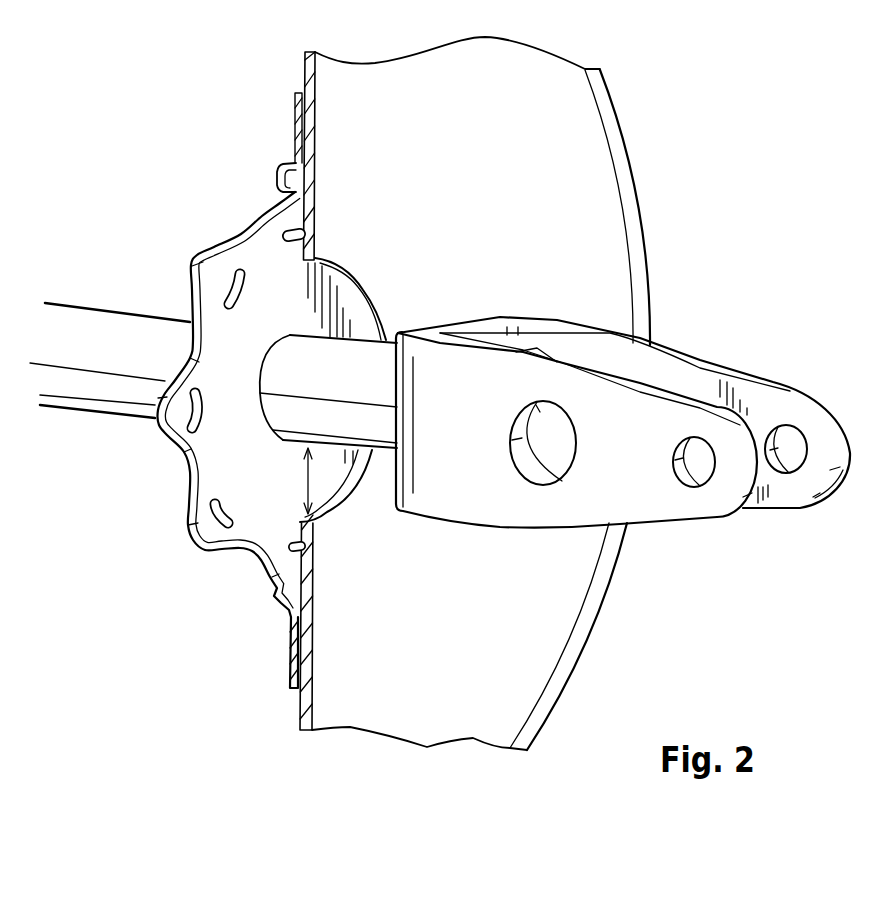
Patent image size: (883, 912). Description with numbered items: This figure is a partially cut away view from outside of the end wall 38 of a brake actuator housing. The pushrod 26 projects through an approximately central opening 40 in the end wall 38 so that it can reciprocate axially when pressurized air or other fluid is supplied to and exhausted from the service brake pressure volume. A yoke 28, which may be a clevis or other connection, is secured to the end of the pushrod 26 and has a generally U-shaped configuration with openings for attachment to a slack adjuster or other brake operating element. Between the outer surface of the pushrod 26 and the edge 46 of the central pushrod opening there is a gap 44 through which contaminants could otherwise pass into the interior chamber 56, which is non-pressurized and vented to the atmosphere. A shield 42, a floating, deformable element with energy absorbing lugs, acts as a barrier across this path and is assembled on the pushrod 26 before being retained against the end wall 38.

The pushrod 26 is at (82, 305).
The yoke 28 is at (645, 498).
The end wall 38 is at (313, 667).
The central opening 40 is at (352, 493).
The shield 42 is at (252, 231).
The gap 44 is at (315, 478).
The edge of the central pushrod opening 46 is at (392, 302).
The interior chamber 56 is at (176, 655).